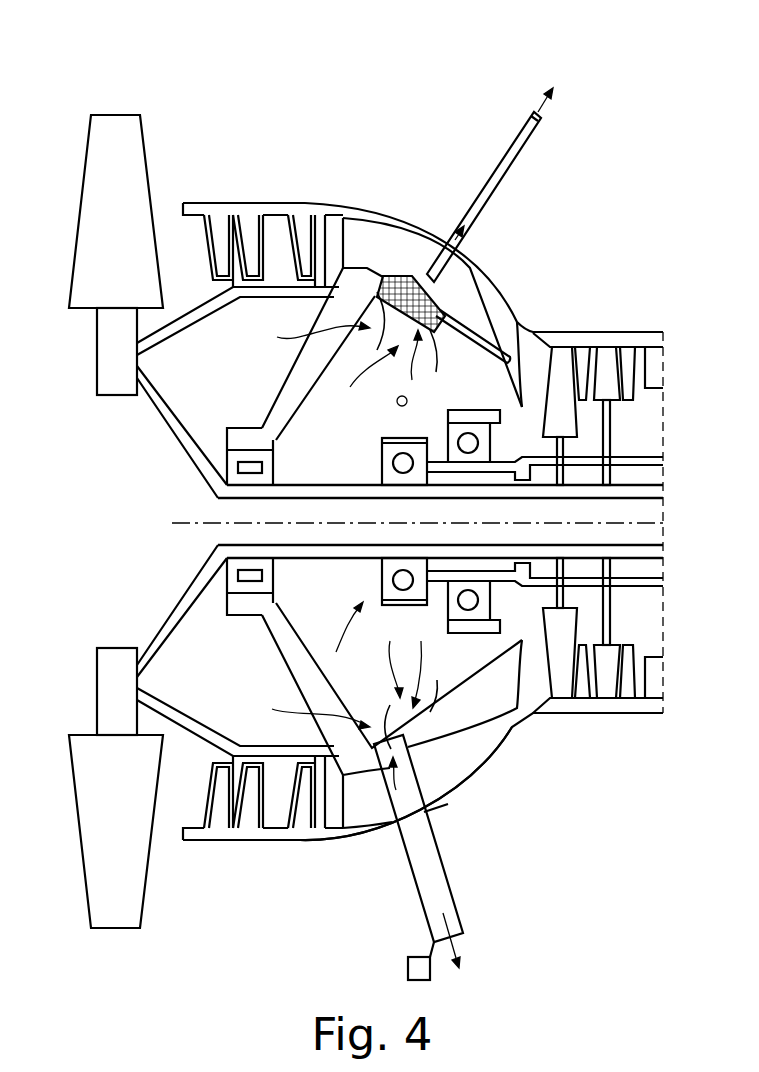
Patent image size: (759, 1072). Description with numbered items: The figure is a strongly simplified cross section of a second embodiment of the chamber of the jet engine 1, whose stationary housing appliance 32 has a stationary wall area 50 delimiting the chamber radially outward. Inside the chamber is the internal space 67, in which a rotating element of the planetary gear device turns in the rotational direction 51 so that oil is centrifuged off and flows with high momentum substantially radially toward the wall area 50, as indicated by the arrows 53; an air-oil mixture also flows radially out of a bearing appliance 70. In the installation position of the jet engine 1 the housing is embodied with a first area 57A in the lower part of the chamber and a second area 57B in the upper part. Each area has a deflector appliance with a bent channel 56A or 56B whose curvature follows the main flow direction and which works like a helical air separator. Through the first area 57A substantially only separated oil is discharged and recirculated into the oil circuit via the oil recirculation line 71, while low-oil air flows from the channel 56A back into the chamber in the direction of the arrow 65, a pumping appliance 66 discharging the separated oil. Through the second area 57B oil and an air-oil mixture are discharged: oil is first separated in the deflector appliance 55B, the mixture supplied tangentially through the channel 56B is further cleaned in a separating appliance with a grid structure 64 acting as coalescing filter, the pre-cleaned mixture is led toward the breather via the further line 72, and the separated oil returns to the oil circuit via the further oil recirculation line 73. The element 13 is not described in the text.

The jet engine 1 is at (88, 82).
The accessory gearbox 13 is at (228, 464).
The housing appliance 32 is at (370, 262).
The wall area 50 is at (448, 707).
The rotational direction 51 is at (397, 406).
The arrows 53 is at (420, 372).
The deflector appliance 55B is at (298, 525).
The channel 56A is at (407, 683).
The channel 56B is at (352, 379).
The first area 57A is at (393, 772).
The second area 57B is at (405, 290).
The grid structure 64 is at (343, 271).
The arrow 65 is at (466, 240).
The pumping appliance 66 is at (408, 968).
The internal space 67 is at (218, 411).
The bearing appliance 70 is at (335, 636).
The oil recirculation line 71 is at (437, 882).
The further line 72 is at (510, 142).
The further oil recirculation line 73 is at (478, 322).